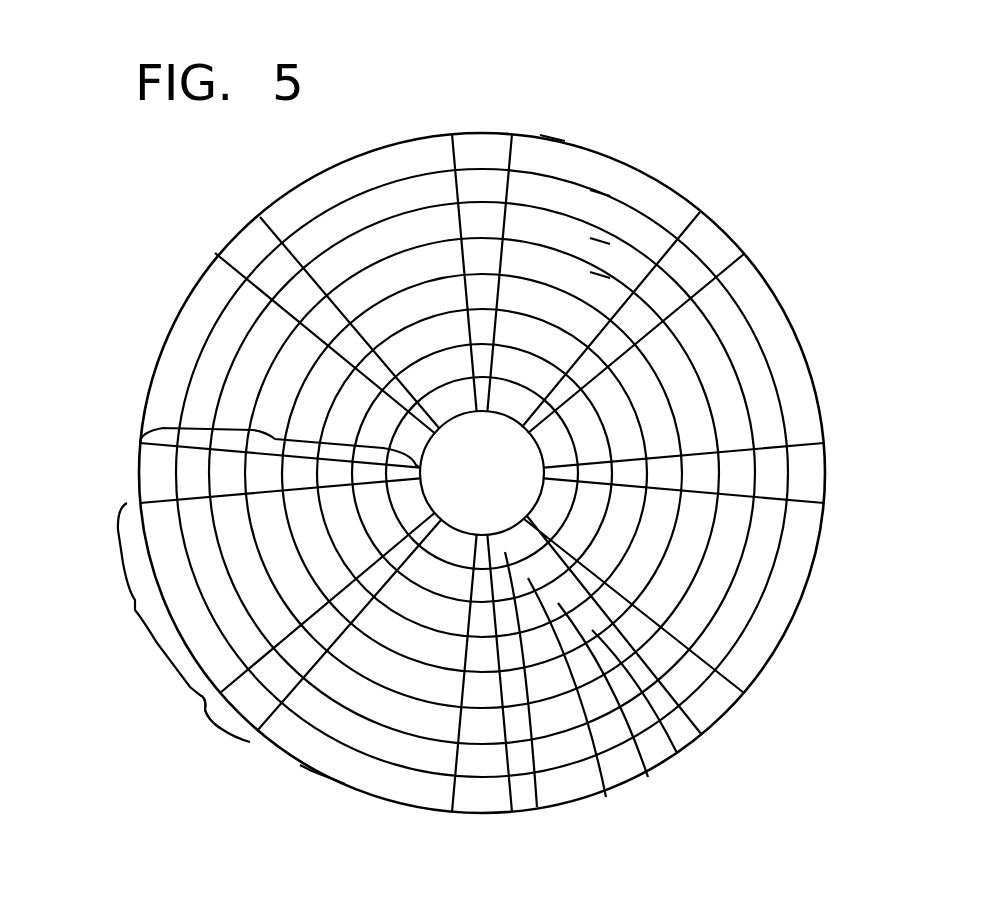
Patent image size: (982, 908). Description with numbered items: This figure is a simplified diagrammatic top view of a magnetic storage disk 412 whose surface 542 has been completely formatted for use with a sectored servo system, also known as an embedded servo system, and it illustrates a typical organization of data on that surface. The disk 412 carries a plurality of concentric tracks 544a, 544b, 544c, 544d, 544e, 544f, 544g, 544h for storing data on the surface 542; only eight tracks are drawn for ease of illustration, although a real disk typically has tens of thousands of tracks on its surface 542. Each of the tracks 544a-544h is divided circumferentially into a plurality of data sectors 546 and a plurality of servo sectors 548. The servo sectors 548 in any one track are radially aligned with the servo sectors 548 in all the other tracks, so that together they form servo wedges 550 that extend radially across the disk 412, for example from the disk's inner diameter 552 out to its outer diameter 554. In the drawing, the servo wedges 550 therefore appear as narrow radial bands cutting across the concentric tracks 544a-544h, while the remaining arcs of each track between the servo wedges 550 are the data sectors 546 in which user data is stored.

The disk 412 is at (317, 172).
The surface 542 is at (460, 238).
The track 544a is at (561, 157).
The track 544b is at (607, 213).
The track 544c is at (605, 257).
The track 544d is at (603, 288).
The track 544e is at (678, 752).
The track 544f is at (653, 782).
The track 544g is at (610, 800).
The track 544h is at (537, 807).
The data sector 546 is at (135, 610).
The servo sector 548 is at (220, 728).
The servo wedge 550 is at (265, 436).
The inner diameter 552 is at (432, 505).
The outer diameter 554 is at (322, 775).